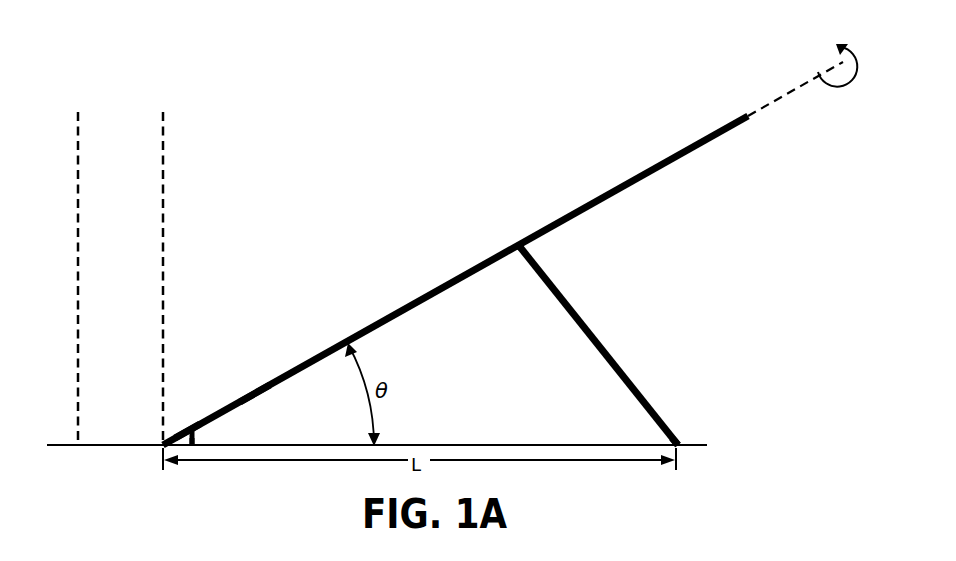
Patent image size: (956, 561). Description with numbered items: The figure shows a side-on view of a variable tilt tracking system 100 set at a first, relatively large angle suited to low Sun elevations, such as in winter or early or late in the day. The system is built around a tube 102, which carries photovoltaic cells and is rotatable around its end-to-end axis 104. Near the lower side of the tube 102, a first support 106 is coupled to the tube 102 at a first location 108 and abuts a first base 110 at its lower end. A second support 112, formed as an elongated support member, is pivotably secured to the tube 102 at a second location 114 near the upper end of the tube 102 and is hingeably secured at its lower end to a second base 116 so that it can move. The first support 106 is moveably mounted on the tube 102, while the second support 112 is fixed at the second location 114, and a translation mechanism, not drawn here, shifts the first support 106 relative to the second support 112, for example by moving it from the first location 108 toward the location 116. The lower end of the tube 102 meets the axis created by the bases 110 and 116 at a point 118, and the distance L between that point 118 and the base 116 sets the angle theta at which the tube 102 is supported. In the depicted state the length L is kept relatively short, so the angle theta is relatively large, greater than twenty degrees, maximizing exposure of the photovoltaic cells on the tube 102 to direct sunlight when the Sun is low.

The tracking system 100 is at (513, 76).
The tube 102 is at (633, 178).
The end-to-end axis 104 is at (793, 95).
The first support 106 is at (195, 433).
The first location 108 is at (198, 420).
The first base 110 is at (195, 442).
The second support 112 is at (610, 353).
The second location 114 is at (521, 242).
The second base 116 is at (255, 392).
The point 118 is at (158, 450).